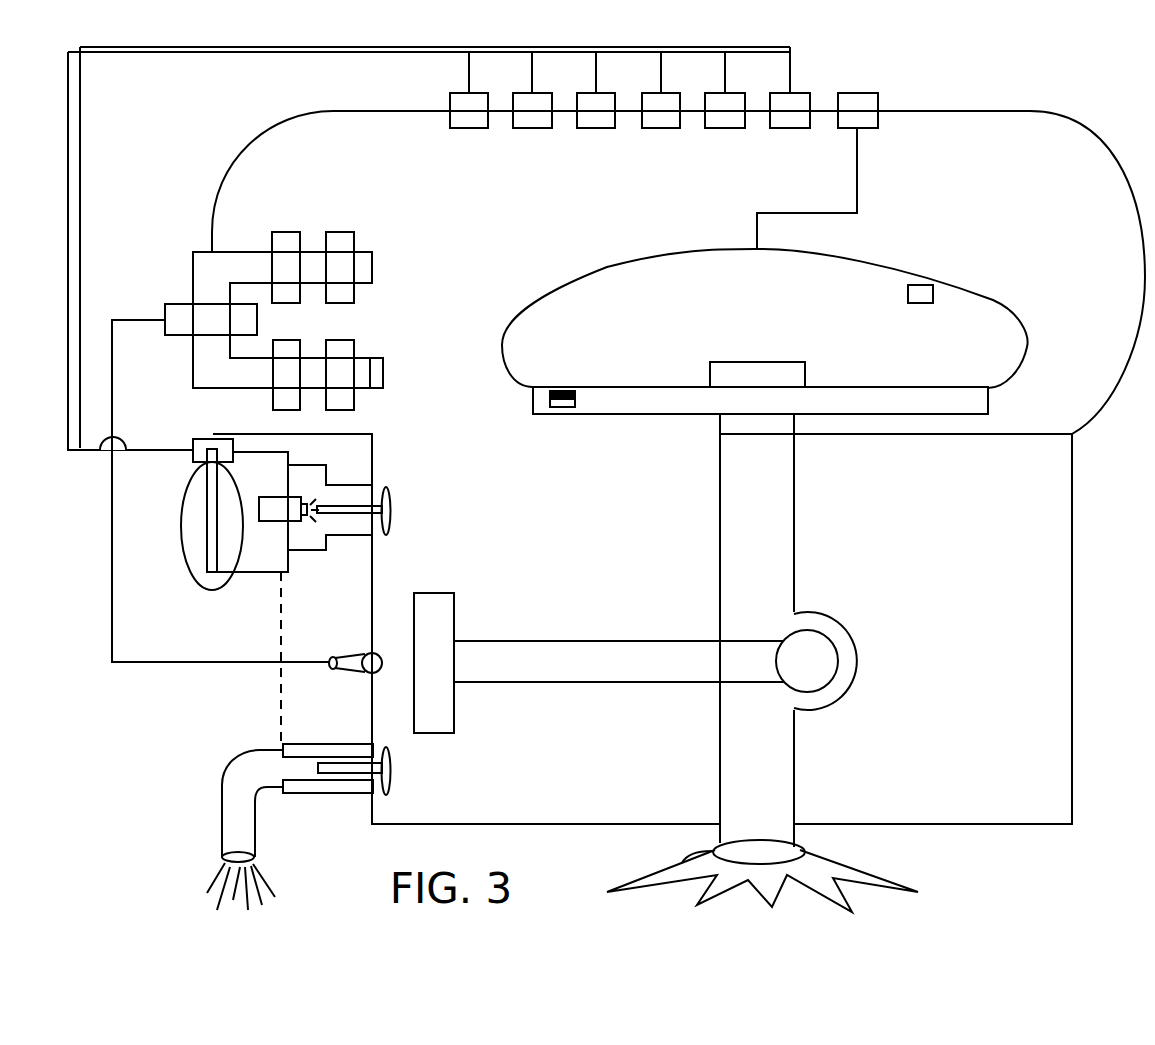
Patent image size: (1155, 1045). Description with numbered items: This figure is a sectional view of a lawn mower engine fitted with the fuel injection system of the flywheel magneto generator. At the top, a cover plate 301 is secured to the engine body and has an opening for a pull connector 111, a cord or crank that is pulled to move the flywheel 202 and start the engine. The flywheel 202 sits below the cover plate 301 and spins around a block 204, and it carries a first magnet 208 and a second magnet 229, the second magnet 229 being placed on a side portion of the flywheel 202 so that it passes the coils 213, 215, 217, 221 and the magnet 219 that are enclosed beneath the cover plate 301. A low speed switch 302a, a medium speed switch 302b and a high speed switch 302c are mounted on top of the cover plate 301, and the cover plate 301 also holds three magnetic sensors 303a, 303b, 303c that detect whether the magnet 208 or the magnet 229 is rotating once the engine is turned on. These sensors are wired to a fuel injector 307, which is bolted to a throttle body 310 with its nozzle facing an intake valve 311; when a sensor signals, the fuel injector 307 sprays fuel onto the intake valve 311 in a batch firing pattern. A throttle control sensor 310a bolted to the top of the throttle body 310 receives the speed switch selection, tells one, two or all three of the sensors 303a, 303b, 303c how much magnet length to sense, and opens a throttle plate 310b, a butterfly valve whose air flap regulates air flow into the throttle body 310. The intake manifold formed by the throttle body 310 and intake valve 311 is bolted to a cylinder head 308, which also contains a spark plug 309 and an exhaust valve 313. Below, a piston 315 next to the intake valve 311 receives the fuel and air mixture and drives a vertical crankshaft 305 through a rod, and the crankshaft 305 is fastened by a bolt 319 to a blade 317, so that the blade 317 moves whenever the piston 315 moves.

The pull connector 111 is at (878, 103).
The cover plate 301 is at (1062, 122).
The flywheel 202 is at (988, 307).
The block 204 is at (790, 362).
The magnet 208 is at (917, 285).
The second magnet 229 is at (573, 402).
The crankshaft 305 is at (795, 535).
The piston 315 is at (563, 685).
The blade 317 is at (872, 872).
The bolt 319 is at (683, 863).
The low speed switch 302a is at (665, 130).
The medium speed switch 302b is at (725, 130).
The high speed switch 302c is at (788, 130).
The magnetic sensor 303a is at (465, 130).
The magnetic sensor 303b is at (535, 130).
The magnetic sensor 303c is at (600, 130).
The coil 213 is at (287, 232).
The coil 215 is at (178, 302).
The coil 217 is at (347, 340).
The magnet 219 is at (385, 373).
The coil 221 is at (337, 232).
The fuel injector 307 is at (277, 521).
The cylinder head 308 is at (280, 707).
The spark plug 309 is at (357, 672).
The throttle body 310 is at (250, 524).
The throttle control sensor 310a is at (205, 437).
The throttle plate 310b is at (207, 555).
The intake valve 311 is at (393, 493).
The exhaust valve 313 is at (328, 795).